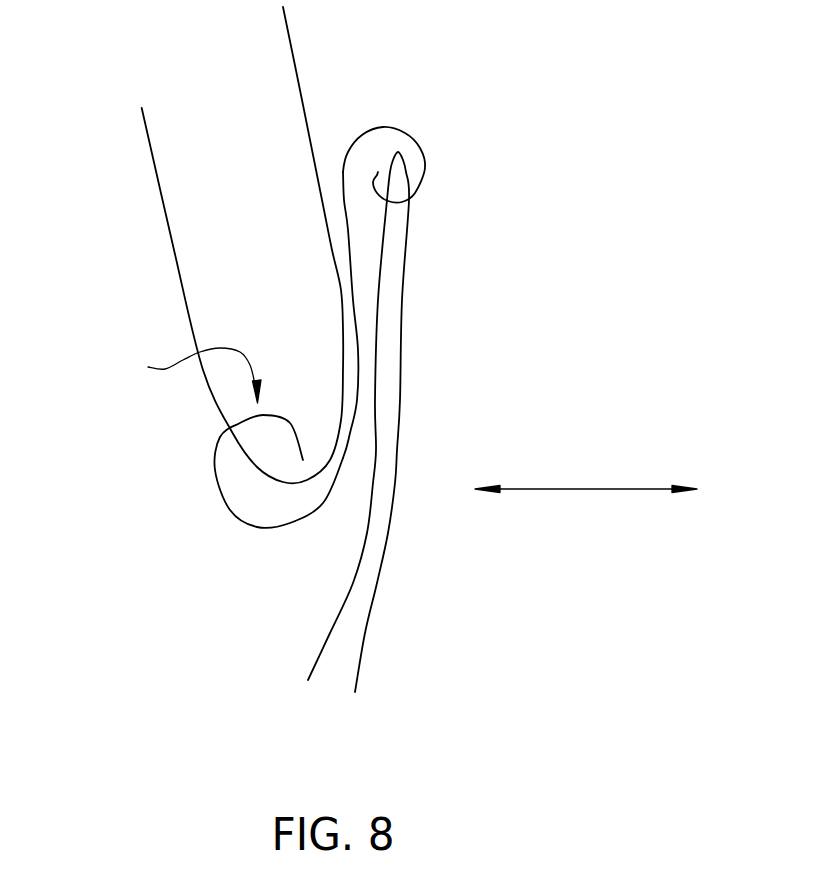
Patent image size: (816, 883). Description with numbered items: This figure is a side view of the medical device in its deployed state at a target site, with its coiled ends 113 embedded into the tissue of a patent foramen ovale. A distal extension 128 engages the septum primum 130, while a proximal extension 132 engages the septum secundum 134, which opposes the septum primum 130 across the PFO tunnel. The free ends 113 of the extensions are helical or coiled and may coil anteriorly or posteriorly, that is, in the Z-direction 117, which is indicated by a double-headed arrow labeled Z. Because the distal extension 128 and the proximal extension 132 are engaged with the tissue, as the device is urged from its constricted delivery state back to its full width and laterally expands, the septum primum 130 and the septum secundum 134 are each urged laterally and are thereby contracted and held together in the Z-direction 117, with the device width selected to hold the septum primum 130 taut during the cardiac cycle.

The coiled end 113 is at (182, 375).
The Z-direction 117 is at (598, 488).
The distal extension 128 is at (400, 127).
The septum primum 130 is at (405, 298).
The proximal extension 132 is at (234, 520).
The septum secundum 134 is at (178, 278).